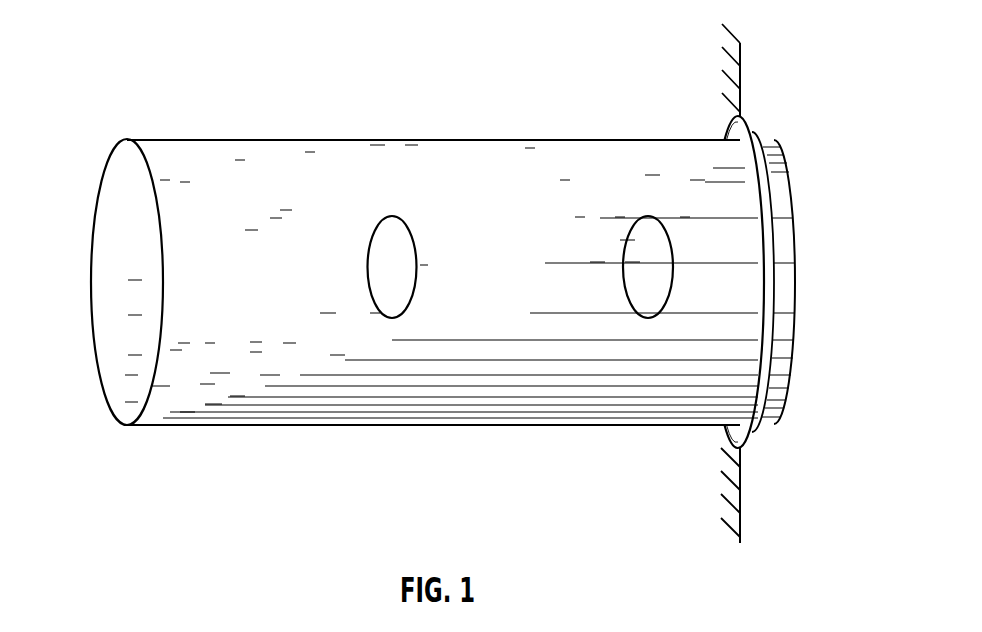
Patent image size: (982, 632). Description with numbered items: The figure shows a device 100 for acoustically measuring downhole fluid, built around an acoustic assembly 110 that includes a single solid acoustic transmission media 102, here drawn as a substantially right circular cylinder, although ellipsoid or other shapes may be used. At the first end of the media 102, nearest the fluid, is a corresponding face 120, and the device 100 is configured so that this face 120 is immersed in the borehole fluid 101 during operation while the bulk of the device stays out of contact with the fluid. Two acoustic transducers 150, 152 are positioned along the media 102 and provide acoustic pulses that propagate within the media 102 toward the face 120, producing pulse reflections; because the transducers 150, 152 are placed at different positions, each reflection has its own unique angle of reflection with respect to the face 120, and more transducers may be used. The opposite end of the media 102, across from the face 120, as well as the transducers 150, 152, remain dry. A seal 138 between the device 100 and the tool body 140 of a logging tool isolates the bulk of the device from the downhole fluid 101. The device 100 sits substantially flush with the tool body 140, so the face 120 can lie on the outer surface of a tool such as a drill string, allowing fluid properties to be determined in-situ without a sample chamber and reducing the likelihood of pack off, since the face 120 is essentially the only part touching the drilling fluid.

The device 100 is at (118, 53).
The borehole fluid 101 is at (856, 284).
The acoustic transmission media 102 is at (264, 140).
The acoustic assembly 110 is at (240, 457).
The face 120 is at (793, 207).
The seal 138 is at (744, 127).
The tool body 140 is at (742, 82).
The acoustic transducer 150 is at (393, 270).
The acoustic transducer 152 is at (648, 270).